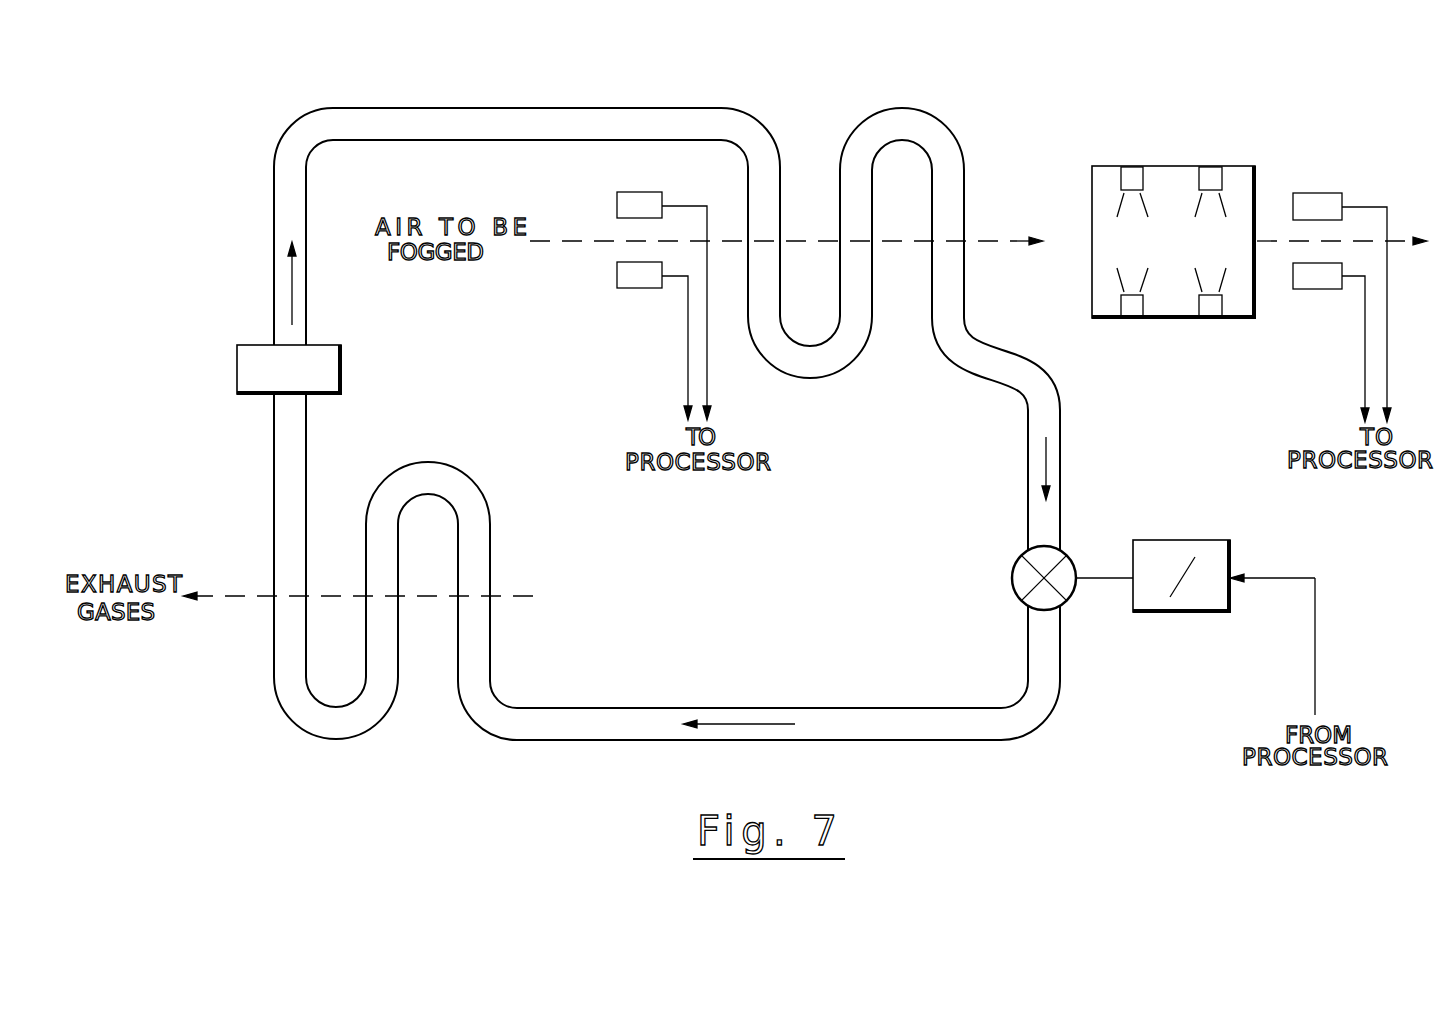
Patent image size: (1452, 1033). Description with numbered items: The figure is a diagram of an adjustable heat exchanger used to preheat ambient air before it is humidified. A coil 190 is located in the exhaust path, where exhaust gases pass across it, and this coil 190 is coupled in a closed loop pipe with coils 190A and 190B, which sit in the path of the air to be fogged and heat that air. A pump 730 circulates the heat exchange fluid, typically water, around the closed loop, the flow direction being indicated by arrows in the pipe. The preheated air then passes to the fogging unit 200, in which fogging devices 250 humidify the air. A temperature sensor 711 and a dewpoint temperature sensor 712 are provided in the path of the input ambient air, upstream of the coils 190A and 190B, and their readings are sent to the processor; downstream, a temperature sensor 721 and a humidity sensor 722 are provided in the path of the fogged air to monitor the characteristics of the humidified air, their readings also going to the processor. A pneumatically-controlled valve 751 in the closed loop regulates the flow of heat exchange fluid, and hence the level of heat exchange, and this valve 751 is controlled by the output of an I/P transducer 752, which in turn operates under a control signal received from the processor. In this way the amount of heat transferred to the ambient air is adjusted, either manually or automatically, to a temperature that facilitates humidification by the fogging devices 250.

The coil 190 is at (669, 418).
The coil 190A is at (833, 110).
The coil 190B is at (950, 229).
The fogging unit 200 is at (1168, 205).
The fogging devices 250 is at (1132, 171).
The temperature sensor 711 is at (623, 191).
The dewpoint temperature sensor 712 is at (617, 288).
The temperature sensor 721 is at (1317, 193).
The humidity sensor 722 is at (1314, 290).
The pump 730 is at (237, 352).
The pneumatically-controlled valve 751 is at (1014, 562).
The I/P transducer 752 is at (1172, 540).